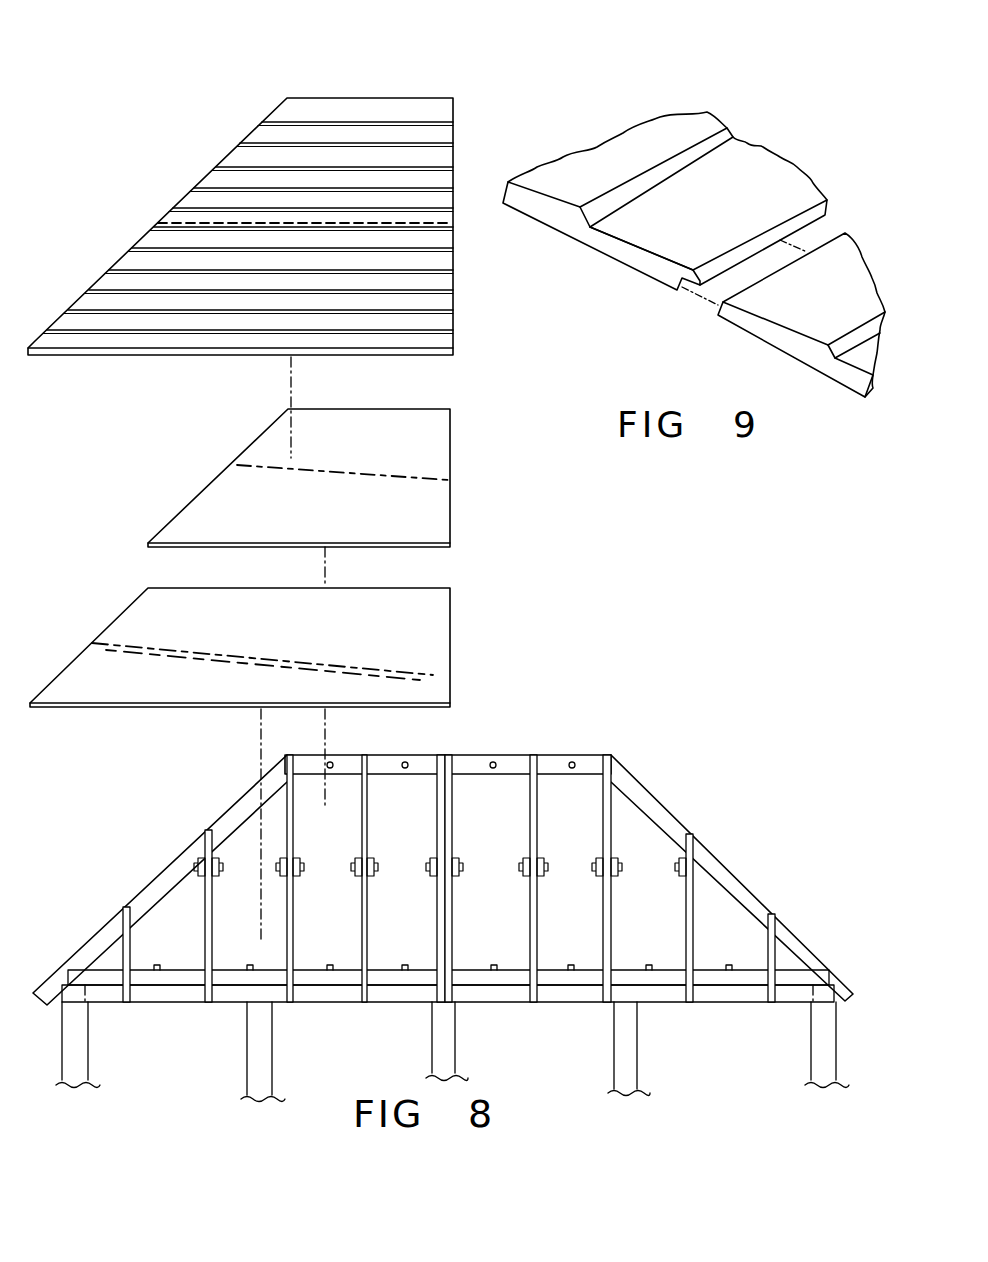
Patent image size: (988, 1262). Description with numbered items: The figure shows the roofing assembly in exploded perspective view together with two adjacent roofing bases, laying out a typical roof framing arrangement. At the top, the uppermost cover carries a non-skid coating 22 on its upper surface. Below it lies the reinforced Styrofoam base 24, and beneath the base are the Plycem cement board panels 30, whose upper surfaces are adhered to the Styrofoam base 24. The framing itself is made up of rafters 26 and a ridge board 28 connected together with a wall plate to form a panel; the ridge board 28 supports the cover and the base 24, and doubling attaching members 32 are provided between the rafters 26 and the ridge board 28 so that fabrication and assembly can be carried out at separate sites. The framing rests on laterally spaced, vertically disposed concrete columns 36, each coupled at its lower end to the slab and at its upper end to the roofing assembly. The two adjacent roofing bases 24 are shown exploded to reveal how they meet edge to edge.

In FIG. 8, the non-skid coating 22 is at (403, 108).
In FIG. 9, the reinforced Styrofoam base 24 is at (750, 153).
In FIG. 8, the rafters 26 is at (205, 930).
In FIG. 8, the ridge board 28 is at (590, 755).
In FIG. 8, the Plycem cement board panels 30 is at (450, 490).
In FIG. 8, the doubling attaching members 32 is at (457, 851).
In FIG. 8, the concrete columns 36 is at (817, 1022).